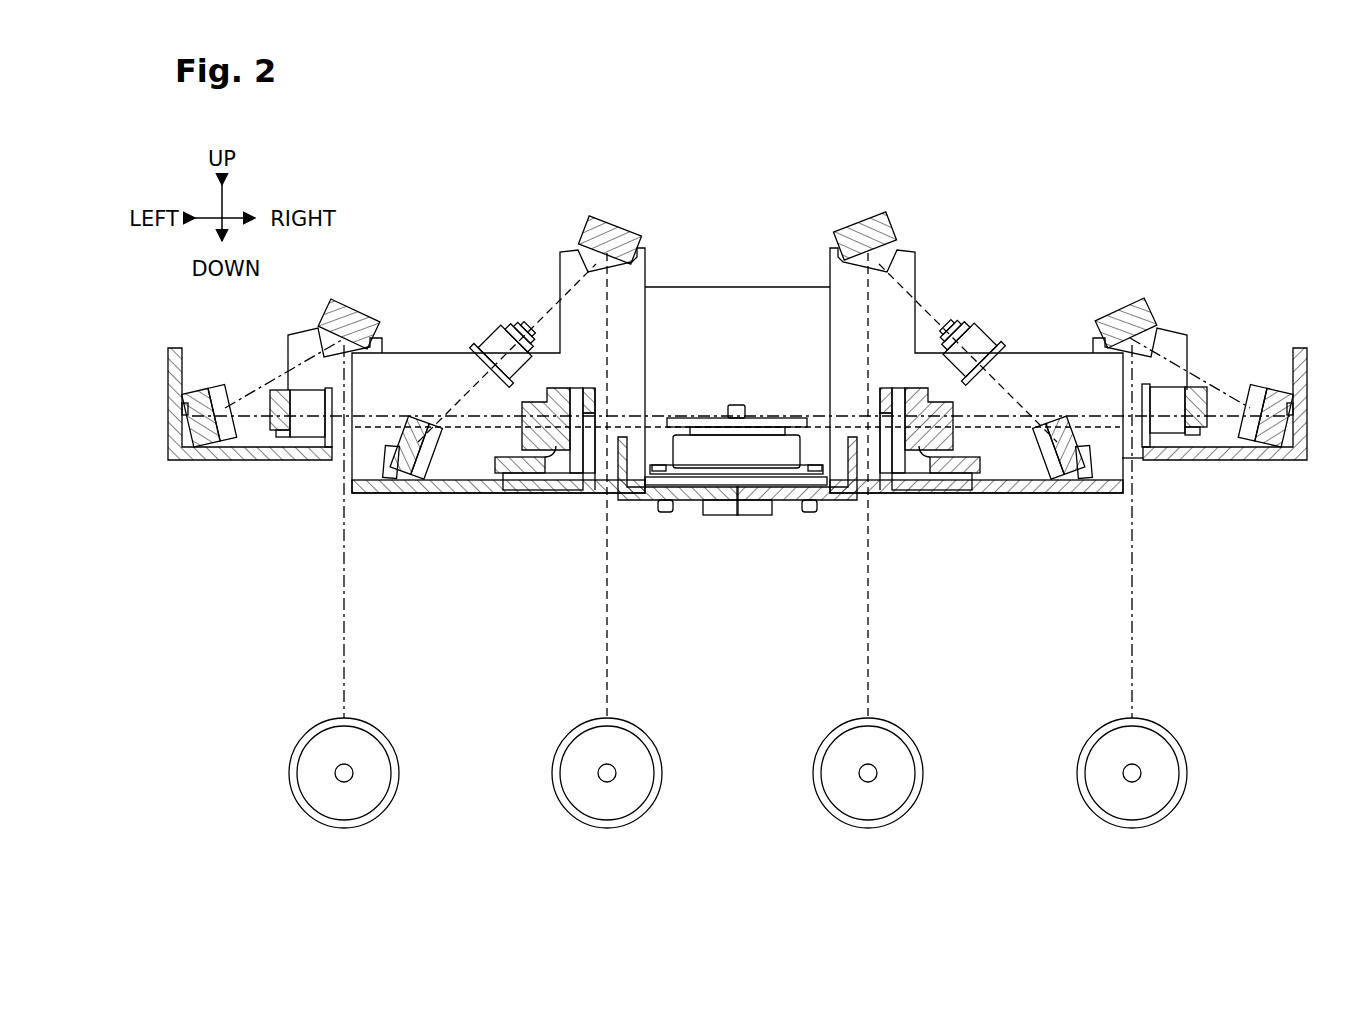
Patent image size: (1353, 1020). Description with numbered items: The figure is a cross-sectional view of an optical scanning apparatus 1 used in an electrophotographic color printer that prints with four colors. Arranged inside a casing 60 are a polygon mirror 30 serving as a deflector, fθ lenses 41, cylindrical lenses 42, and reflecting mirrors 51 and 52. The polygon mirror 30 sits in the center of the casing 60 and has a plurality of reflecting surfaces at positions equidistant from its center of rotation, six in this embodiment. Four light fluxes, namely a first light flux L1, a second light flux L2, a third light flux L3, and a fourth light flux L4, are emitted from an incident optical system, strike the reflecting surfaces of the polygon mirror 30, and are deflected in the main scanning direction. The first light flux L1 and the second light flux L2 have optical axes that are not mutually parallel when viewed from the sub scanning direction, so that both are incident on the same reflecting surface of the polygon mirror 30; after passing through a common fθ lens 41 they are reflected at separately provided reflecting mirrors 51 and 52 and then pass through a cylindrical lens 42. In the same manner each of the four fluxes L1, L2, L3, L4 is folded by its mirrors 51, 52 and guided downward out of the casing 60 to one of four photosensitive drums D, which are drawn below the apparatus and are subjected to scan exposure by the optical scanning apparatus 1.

The optical scanning apparatus 1 is at (1058, 220).
The polygon mirror 30 is at (758, 418).
The fθ lens 41 is at (550, 470).
The cylindrical lens 42 is at (490, 347).
The reflecting mirror 51 is at (203, 440).
The reflecting mirror 52 is at (345, 304).
The casing 60 is at (1210, 470).
The first light flux L1 is at (998, 432).
The second light flux L2 is at (1087, 413).
The third light flux L3 is at (500, 470).
The fourth light flux L4 is at (398, 392).
The photosensitive drum D is at (392, 793).